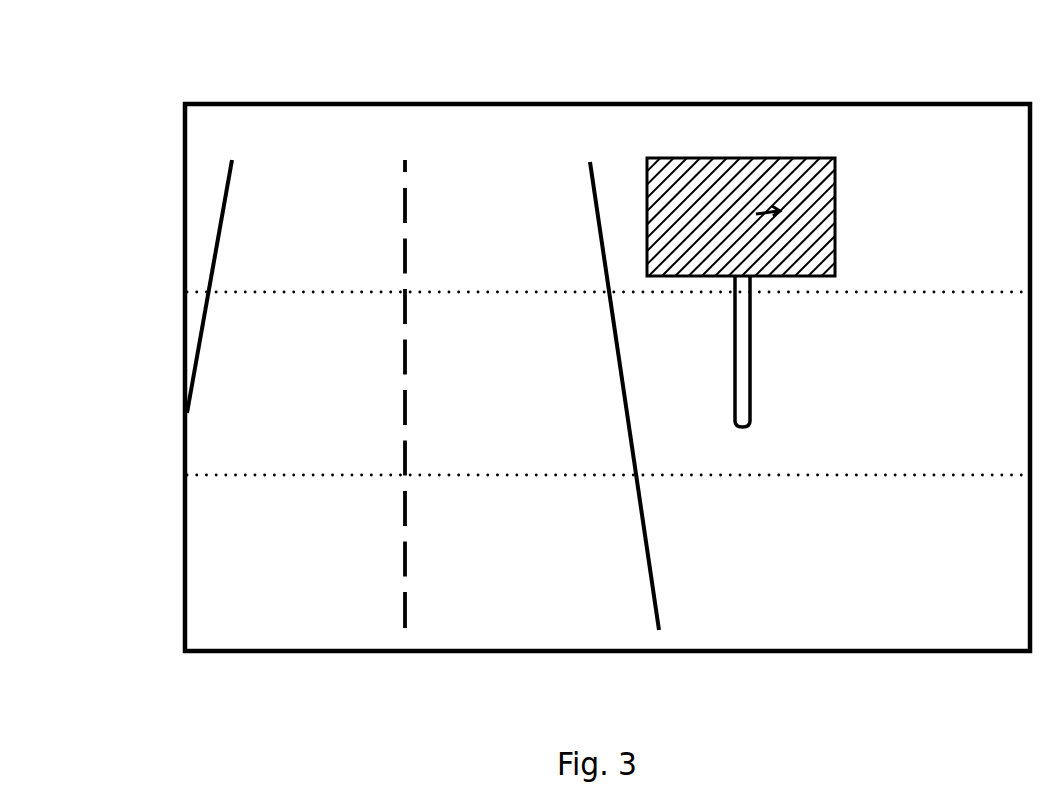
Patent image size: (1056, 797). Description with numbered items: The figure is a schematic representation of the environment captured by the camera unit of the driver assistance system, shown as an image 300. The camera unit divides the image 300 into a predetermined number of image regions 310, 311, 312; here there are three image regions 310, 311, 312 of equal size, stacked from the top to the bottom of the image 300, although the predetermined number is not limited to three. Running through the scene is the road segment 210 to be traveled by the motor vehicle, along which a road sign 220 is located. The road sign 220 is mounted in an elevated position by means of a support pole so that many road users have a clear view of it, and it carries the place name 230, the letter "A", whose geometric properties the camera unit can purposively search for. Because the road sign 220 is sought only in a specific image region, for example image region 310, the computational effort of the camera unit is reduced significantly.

The image 300 is at (611, 101).
The image region 310 is at (264, 254).
The image region 311 is at (252, 381).
The image region 312 is at (254, 557).
The road segment 210 is at (449, 381).
The road sign 220 is at (747, 146).
The place name 230 is at (838, 190).